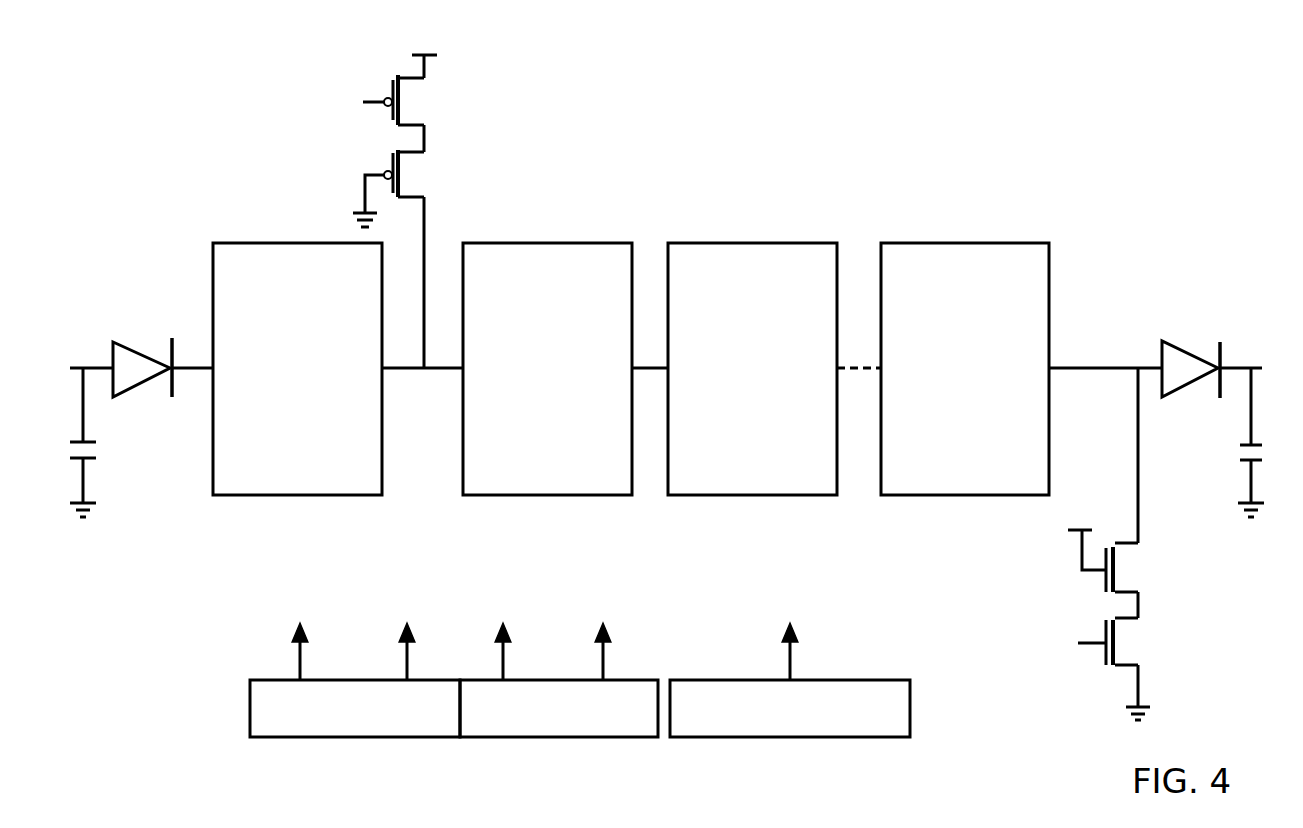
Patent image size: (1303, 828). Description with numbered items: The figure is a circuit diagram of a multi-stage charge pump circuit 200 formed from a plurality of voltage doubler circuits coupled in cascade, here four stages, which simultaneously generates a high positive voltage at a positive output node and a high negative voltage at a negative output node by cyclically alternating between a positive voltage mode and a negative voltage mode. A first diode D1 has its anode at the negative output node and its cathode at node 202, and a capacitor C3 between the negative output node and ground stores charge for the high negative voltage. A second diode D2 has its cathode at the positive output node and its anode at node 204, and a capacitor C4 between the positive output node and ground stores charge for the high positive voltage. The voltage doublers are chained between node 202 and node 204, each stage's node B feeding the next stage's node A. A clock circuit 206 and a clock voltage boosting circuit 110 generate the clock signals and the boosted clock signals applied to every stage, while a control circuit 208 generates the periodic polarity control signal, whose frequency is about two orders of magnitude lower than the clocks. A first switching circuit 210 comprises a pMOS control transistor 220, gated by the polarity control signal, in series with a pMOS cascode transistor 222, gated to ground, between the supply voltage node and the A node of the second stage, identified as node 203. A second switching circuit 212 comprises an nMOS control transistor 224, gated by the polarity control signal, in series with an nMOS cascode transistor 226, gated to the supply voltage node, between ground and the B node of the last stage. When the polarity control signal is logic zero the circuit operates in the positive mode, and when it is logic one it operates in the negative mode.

The multi-stage charge pump circuit 200 is at (665, 421).
The node 202 is at (193, 360).
The node 203 is at (440, 370).
The node 204 is at (1107, 368).
The clock circuit 206 is at (383, 738).
The clock voltage boosting circuit 110 is at (537, 740).
The control circuit 208 is at (757, 738).
The first switching circuit 210 is at (441, 129).
The second switching circuit 212 is at (1078, 544).
The pMOS control transistor 220 is at (390, 83).
The pMOS cascode transistor 222 is at (390, 158).
The nMOS control transistor 224 is at (1120, 643).
The nMOS cascode transistor 226 is at (1120, 572).
The first diode D1 is at (118, 338).
The second diode D2 is at (1170, 340).
The capacitor C3 is at (69, 442).
The capacitor C4 is at (1236, 442).